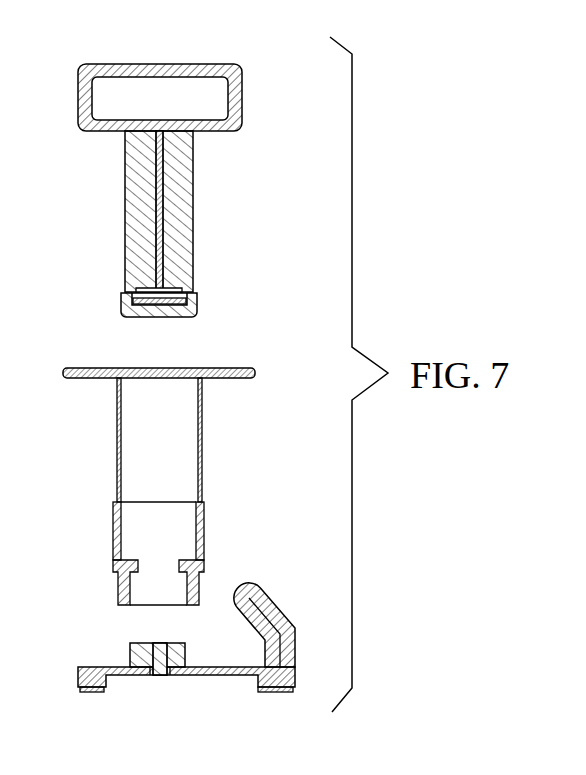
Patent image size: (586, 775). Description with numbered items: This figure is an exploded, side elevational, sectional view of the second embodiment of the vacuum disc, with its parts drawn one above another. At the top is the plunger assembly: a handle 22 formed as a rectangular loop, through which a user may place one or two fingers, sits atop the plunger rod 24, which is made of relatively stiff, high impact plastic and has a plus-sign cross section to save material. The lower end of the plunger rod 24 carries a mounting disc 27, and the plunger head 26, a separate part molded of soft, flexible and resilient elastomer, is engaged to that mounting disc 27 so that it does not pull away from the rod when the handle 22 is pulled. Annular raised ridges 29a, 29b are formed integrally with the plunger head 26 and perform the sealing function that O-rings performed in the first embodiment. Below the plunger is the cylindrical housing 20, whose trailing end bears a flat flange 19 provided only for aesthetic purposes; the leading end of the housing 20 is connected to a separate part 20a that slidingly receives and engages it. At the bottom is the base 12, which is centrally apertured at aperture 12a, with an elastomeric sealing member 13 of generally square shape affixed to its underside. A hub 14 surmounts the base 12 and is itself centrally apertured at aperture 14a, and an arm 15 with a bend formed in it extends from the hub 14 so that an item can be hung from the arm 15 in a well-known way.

The handle 22 is at (216, 64).
The plunger rod 24 is at (194, 176).
The mounting disc 27 is at (134, 293).
The plunger head 26 is at (121, 306).
The annular raised ridge 29a is at (197, 295).
The annular raised ridge 29b is at (197, 314).
The flat flange 19 is at (86, 378).
The cylindrical housing 20 is at (202, 446).
The separate part 20a is at (113, 549).
The arm 15 is at (275, 612).
The base 12 is at (86, 667).
The elastomeric sealing member 13 is at (90, 692).
The hub 14 is at (185, 650).
The aperture 14a is at (147, 643).
The aperture 12a is at (158, 675).